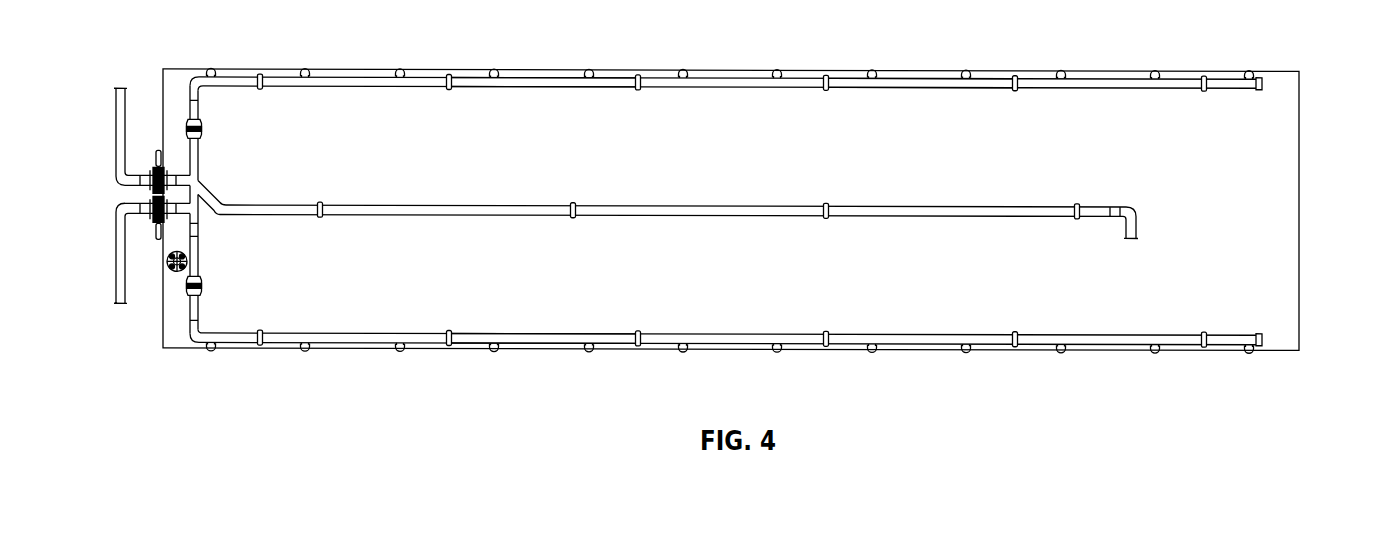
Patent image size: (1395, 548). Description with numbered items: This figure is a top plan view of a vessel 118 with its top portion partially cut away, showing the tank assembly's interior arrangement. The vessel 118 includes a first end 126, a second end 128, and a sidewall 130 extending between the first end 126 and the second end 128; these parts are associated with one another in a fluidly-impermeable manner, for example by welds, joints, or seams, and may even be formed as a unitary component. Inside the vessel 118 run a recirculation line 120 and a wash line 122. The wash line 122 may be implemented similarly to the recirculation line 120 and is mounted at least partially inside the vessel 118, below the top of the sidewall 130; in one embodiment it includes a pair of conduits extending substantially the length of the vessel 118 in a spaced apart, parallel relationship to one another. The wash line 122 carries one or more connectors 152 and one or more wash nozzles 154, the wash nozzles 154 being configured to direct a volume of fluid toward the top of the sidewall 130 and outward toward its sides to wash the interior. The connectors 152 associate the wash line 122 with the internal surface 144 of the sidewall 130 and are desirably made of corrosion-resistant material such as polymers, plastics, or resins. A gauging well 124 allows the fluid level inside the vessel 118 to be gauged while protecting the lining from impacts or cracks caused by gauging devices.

The vessel 118 is at (730, 64).
The recirculation line 120 is at (648, 204).
The wash line 122 is at (540, 76).
The gauging well 124 is at (178, 272).
The first end 126 is at (162, 84).
The second end 128 is at (1300, 103).
The sidewall 130 is at (925, 76).
The internal surface 144 is at (1280, 347).
The connectors 152 is at (637, 73).
The wash nozzles 154 is at (1160, 76).